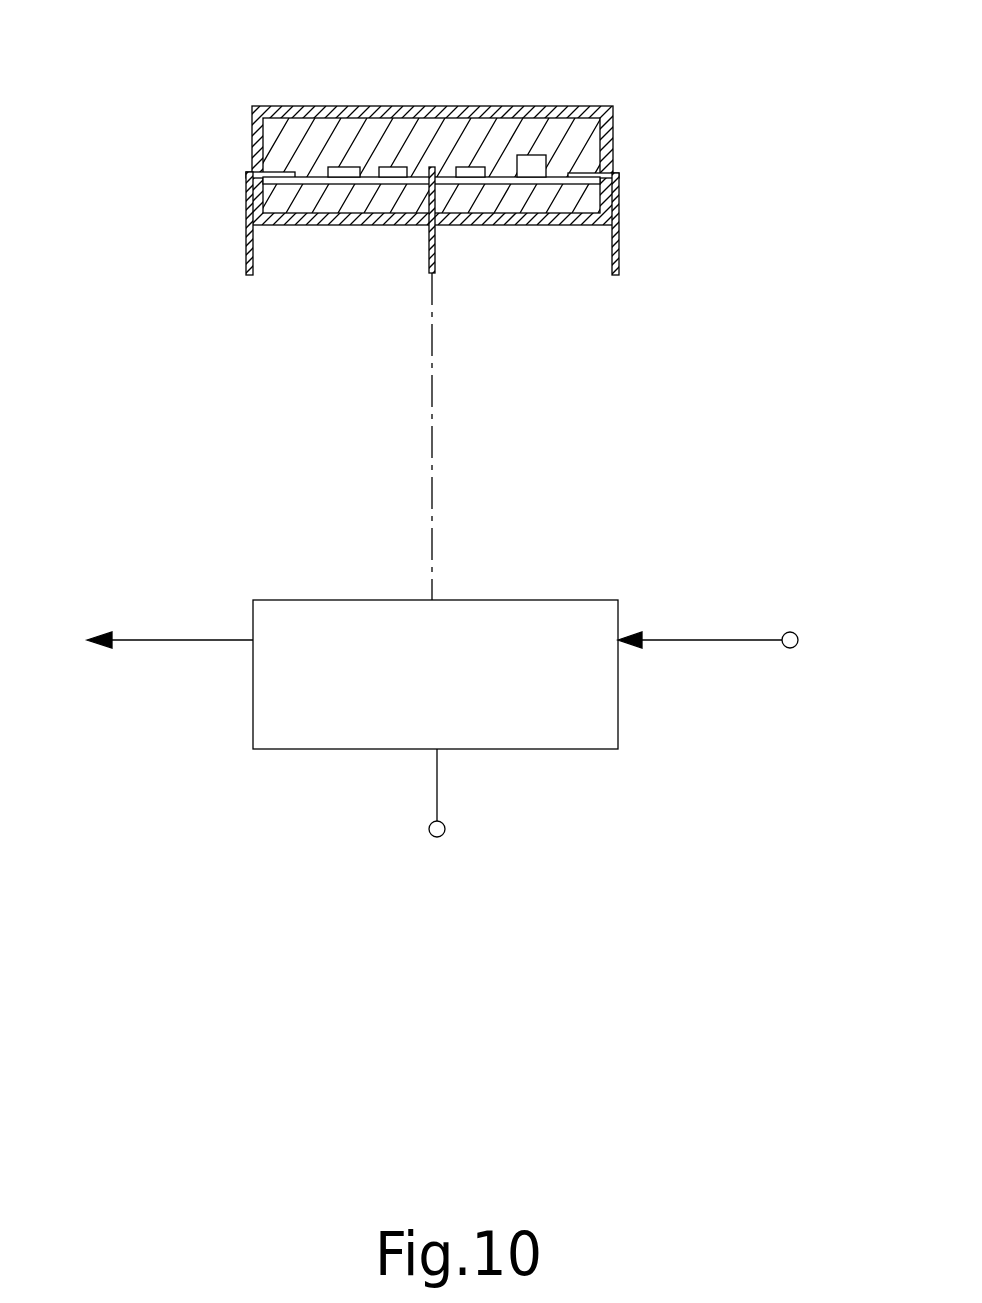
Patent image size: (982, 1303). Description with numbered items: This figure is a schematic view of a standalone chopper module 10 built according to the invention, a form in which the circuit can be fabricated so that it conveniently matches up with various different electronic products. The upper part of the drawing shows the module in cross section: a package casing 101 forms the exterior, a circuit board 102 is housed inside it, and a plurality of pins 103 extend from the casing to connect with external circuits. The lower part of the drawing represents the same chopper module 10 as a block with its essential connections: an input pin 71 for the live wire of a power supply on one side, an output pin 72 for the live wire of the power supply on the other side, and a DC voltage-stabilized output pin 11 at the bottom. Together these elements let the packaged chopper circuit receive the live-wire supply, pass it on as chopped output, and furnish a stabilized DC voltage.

The chopper module 10 is at (232, 110).
The package casing 101 is at (428, 107).
The circuit board 102 is at (568, 175).
The pins 103 is at (248, 257).
The DC voltage-stabilized output pin 11 is at (437, 785).
The input pin 71 is at (697, 640).
The output pin 72 is at (193, 640).